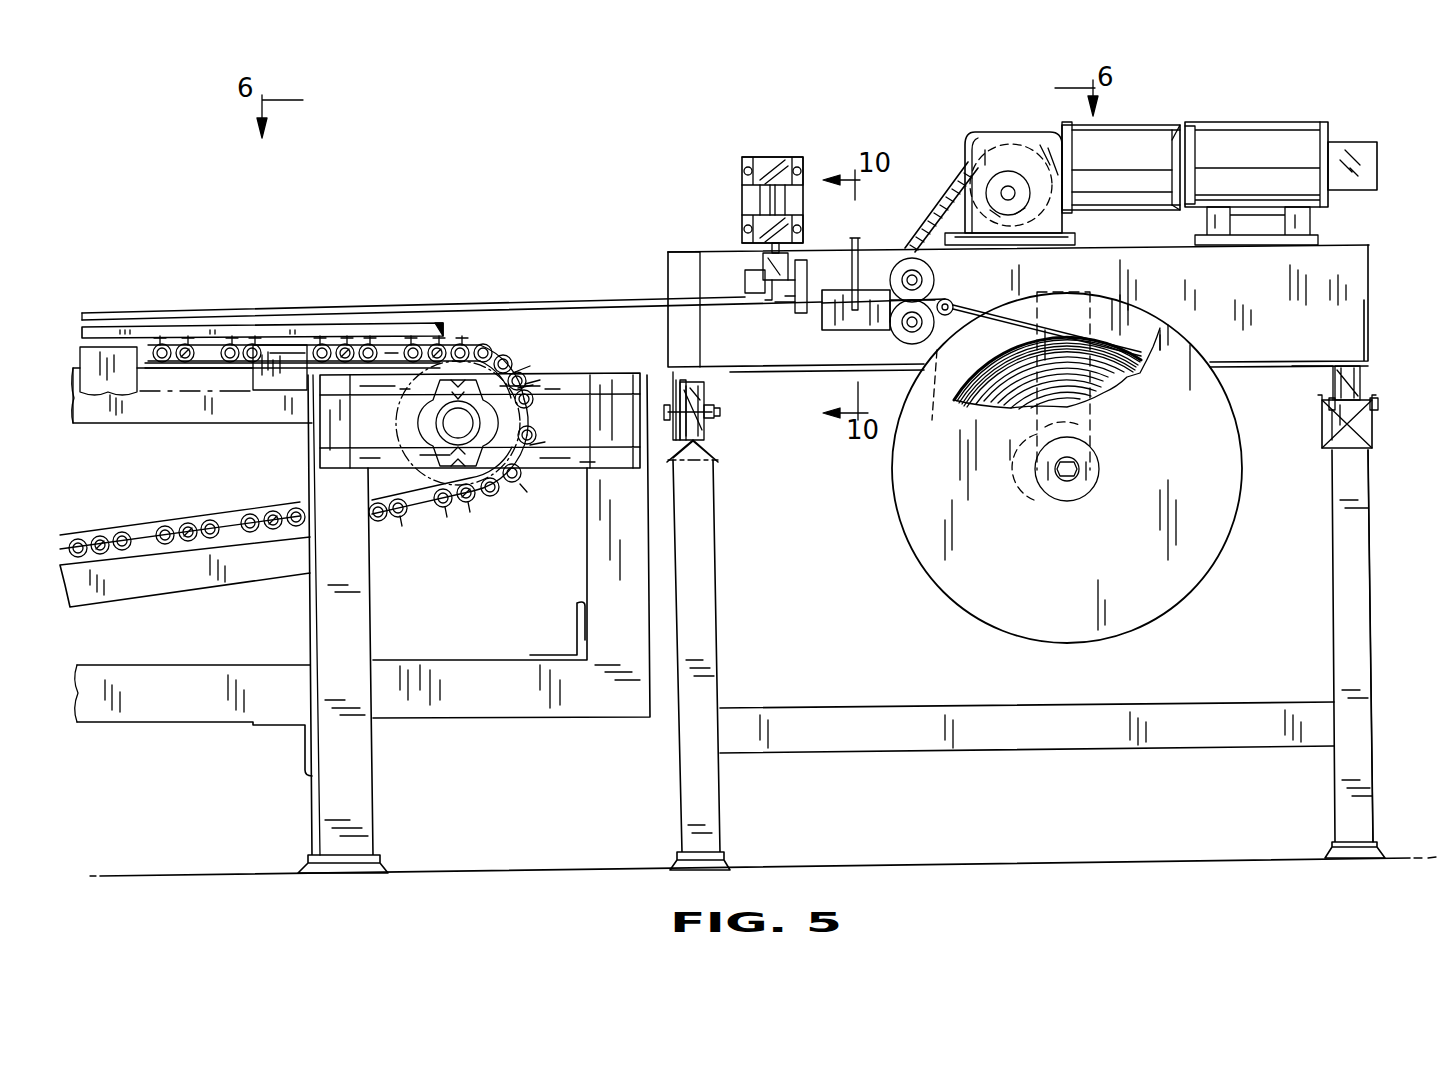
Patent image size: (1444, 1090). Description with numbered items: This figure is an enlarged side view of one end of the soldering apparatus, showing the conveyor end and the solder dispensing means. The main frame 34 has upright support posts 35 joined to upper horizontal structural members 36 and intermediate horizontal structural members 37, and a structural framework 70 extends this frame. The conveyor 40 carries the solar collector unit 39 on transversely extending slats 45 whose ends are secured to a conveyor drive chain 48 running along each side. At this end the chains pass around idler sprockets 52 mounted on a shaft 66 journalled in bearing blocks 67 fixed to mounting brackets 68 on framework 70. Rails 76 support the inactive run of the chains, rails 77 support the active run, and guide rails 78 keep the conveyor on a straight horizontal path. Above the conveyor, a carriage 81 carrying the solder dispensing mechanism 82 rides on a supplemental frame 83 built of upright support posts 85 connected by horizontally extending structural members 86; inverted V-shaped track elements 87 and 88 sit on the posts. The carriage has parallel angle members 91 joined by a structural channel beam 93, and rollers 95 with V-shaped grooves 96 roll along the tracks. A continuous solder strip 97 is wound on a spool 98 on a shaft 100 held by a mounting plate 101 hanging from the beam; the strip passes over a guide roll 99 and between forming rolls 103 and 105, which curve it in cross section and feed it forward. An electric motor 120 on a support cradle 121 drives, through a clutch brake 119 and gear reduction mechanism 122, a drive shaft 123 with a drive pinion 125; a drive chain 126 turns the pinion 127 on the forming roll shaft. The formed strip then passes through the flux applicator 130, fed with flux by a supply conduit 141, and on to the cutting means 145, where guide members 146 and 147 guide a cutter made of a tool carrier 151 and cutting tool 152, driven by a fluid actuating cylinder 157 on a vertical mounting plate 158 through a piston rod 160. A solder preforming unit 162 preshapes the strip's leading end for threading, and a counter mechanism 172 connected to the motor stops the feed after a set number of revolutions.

The frame 34 is at (382, 748).
The upright support posts 35 is at (328, 790).
The horizontal structural members 36 is at (122, 420).
The horizontal structural members 37 is at (167, 712).
The solar collector unit 39 is at (344, 322).
The conveyor 40 is at (214, 333).
The slats 45 is at (530, 362).
The conveyor drive chain 48 is at (159, 347).
The idler sprockets 52 is at (408, 517).
The shaft 66 is at (446, 425).
The bearing blocks 67 is at (490, 425).
The mounting brackets 68 is at (553, 383).
The structural framework 70 is at (562, 718).
The rails 76 is at (162, 590).
The rails 77 is at (224, 370).
The guide rails 78 is at (96, 354).
The carriage 81 is at (1376, 248).
The solder dispensing mechanism 82 is at (888, 252).
The supplemental frame 83 is at (1380, 700).
The upright support posts 85 is at (718, 630).
The horizontally extending structural members 86 is at (875, 750).
The track element 87 is at (716, 448).
The track element 88 is at (1322, 430).
The angle members 91 is at (672, 380).
The structural channel beam 93 is at (1283, 301).
The rollers 95 is at (720, 420).
The V-shaped grooves 96 is at (692, 380).
The solder strip 97 is at (1036, 300).
The spool 98 is at (1100, 584).
The guide roll 99 is at (953, 305).
The shaft 100 is at (1079, 468).
The mounting plate 101 is at (1035, 443).
The forming roll 103 is at (936, 274).
The forming roll 105 is at (905, 338).
The clutch brake 119 is at (1150, 126).
The electric motor 120 is at (1262, 125).
The support cradle 121 is at (1308, 215).
The gear reduction mechanism 122 is at (1042, 135).
The drive shaft 123 is at (1014, 192).
The drive pinion 125 is at (988, 150).
The drive chain 126 is at (950, 198).
The pinion 127 is at (1034, 383).
The flux applicator 130 is at (826, 340).
The supply conduit 141 is at (851, 242).
The cutting means 145 is at (740, 187).
The guide member 146 is at (807, 290).
The guide member 147 is at (745, 282).
The tool carrier 151 is at (783, 295).
The cutting tool 152 is at (790, 290).
The fluid actuating cylinder 157 is at (766, 160).
The vertical mounting plate 158 is at (800, 182).
The piston rod 160 is at (762, 253).
The solder preforming unit 162 is at (702, 329).
The counter mechanism 172 is at (1368, 146).